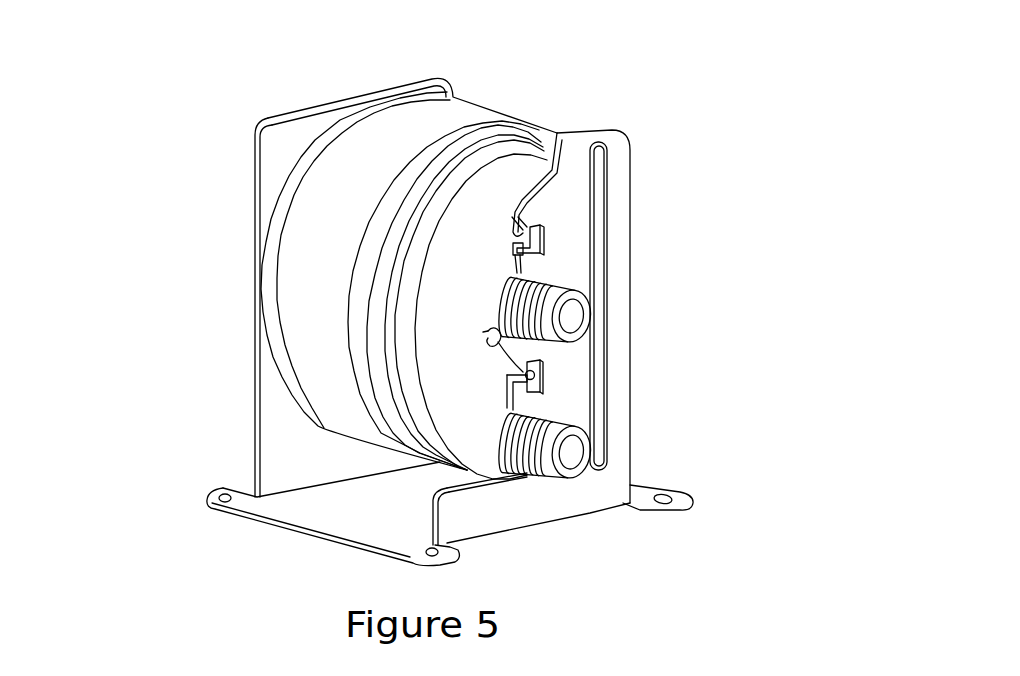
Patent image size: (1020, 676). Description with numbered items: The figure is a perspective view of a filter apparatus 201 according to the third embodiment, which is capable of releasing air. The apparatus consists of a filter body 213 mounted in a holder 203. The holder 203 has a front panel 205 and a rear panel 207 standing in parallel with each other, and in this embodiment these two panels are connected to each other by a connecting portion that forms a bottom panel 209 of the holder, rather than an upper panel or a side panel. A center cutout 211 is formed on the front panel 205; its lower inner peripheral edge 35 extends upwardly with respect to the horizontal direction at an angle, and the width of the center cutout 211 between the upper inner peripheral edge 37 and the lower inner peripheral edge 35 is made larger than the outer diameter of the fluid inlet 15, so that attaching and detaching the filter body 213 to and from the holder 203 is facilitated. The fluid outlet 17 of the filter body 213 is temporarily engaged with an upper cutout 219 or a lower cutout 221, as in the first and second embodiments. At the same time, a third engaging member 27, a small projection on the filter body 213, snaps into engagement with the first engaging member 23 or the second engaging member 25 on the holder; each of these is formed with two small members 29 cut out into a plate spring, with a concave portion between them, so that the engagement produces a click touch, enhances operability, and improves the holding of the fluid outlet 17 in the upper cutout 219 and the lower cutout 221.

The filter apparatus 201 is at (632, 112).
The holder 203 is at (340, 98).
The front panel 205 is at (618, 456).
The rear panel 207 is at (282, 167).
The bottom panel 209 is at (353, 526).
The center cutout 211 is at (483, 332).
The filter body 213 is at (312, 278).
The upper cutout 219 is at (550, 185).
The lower cutout 221 is at (538, 480).
The fluid inlet 15 is at (600, 335).
The fluid outlet 17 is at (588, 468).
The first engaging member 23 is at (543, 232).
The second engaging member 25 is at (545, 381).
The third engaging member 27 is at (548, 364).
The small members 29 is at (512, 214).
The lower inner peripheral edge 35 is at (490, 349).
The upper inner peripheral edge 37 is at (510, 273).